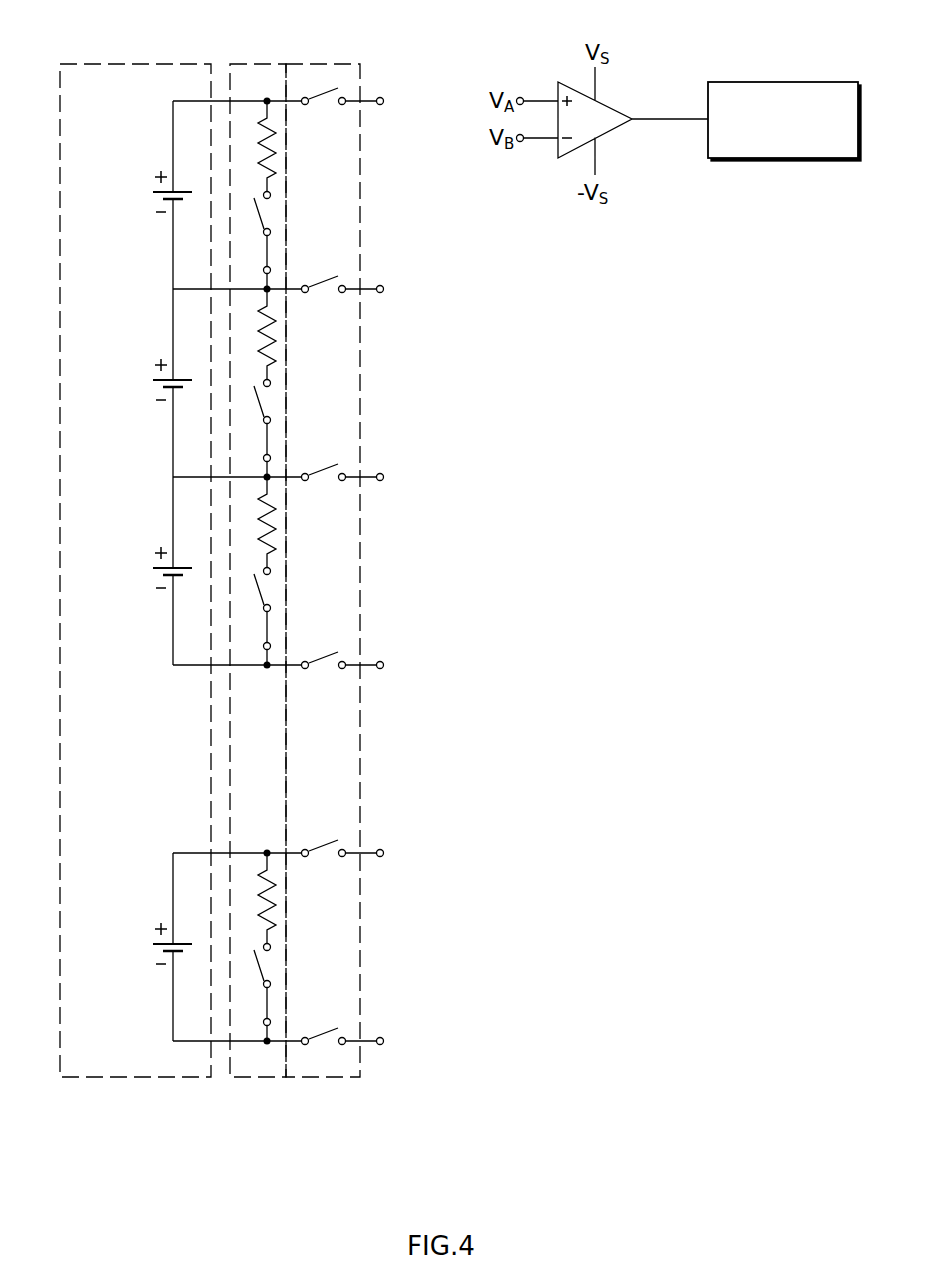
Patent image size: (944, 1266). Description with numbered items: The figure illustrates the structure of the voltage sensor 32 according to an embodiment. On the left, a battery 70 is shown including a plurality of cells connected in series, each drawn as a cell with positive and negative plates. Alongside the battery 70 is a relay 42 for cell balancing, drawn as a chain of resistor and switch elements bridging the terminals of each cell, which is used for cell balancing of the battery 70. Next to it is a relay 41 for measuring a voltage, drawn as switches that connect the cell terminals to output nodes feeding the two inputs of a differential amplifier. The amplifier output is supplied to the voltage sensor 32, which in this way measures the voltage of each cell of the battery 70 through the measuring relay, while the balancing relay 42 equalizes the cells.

The battery 70 is at (134, 64).
The relay for cell balancing 42 is at (257, 64).
The relay for measuring a voltage 41 is at (323, 64).
The voltage sensor 32 is at (783, 82).